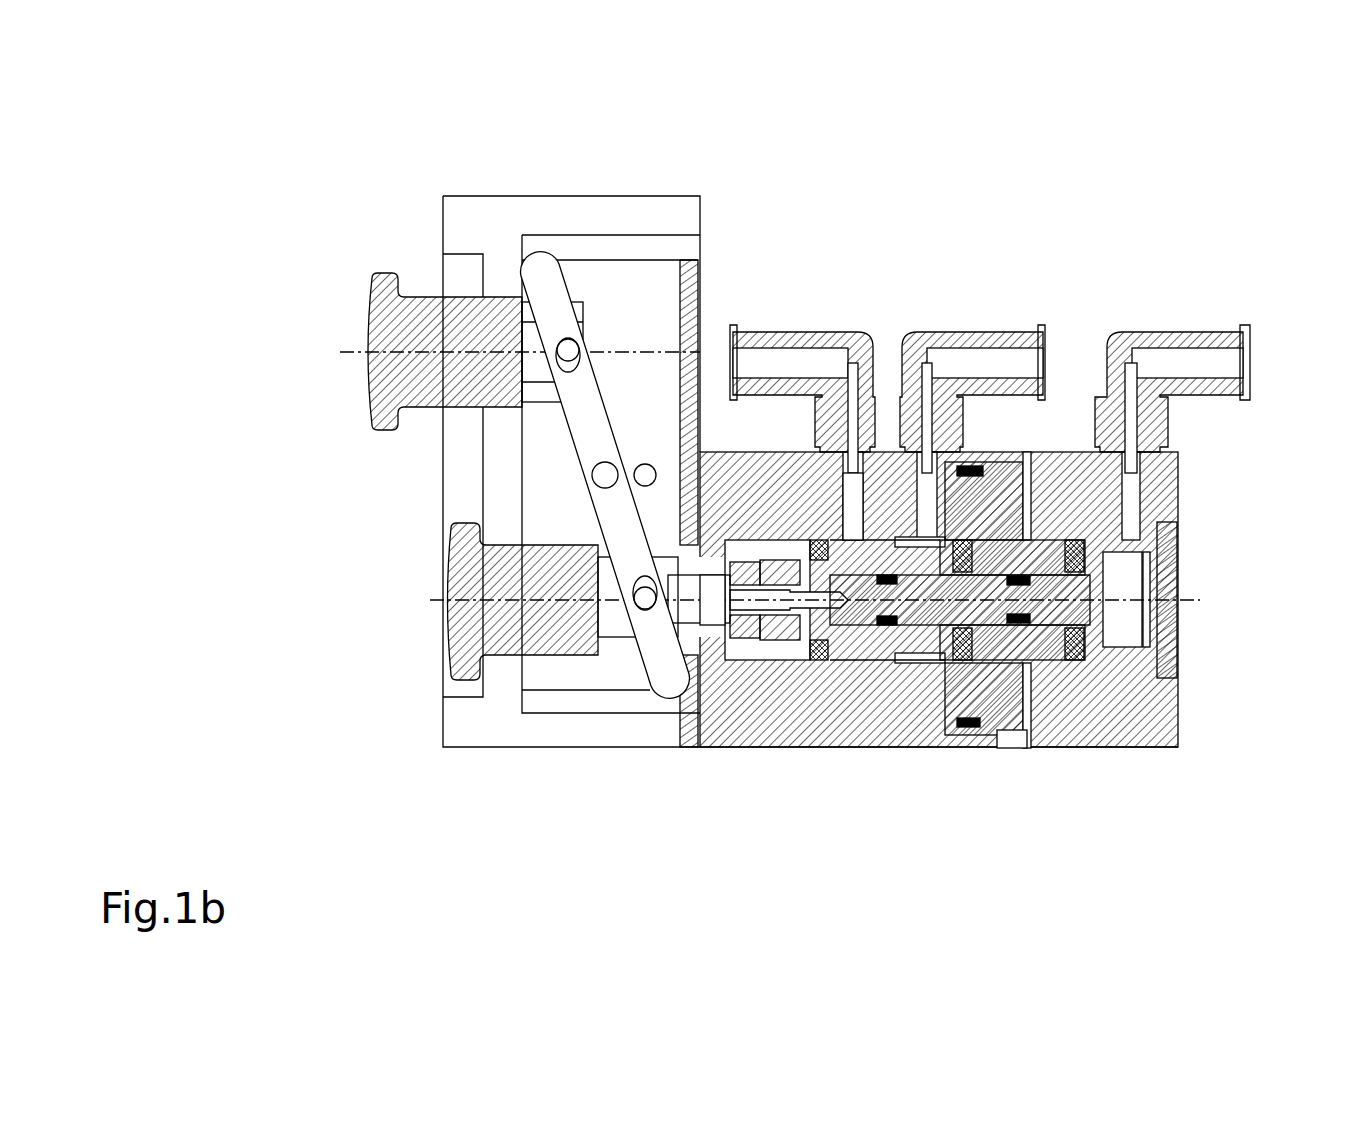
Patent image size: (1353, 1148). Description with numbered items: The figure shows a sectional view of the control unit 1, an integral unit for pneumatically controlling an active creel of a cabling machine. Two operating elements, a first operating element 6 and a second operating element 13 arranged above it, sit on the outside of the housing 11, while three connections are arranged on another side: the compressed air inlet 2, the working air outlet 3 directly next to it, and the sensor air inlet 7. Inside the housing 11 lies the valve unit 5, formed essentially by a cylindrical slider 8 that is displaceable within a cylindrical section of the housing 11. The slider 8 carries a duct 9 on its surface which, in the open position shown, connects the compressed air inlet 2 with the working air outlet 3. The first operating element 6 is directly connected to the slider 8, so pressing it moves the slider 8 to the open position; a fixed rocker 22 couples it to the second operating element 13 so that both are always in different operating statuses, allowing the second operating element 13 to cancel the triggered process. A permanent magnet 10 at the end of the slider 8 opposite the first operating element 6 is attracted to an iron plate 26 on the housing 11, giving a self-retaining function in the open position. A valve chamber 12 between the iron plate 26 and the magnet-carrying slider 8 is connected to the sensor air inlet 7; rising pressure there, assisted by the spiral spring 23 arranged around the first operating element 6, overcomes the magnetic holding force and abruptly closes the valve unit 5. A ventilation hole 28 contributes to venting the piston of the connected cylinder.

The control unit 1 is at (922, 162).
The compressed air inlet 2 is at (783, 355).
The working air outlet 3 is at (1000, 352).
The valve unit 5 is at (912, 668).
The first operating element 6 is at (462, 582).
The sensor air inlet 7 is at (1208, 352).
The slider 8 is at (1048, 605).
The duct 9 is at (908, 540).
The permanent magnet 10 is at (1128, 575).
The housing 11 is at (820, 718).
The valve chamber 12 is at (1150, 592).
The second operating element 13 is at (385, 332).
The rocker 22 is at (620, 512).
The spiral spring 23 is at (617, 640).
The iron plate 26 is at (1168, 655).
The ventilation hole 28 is at (1017, 756).